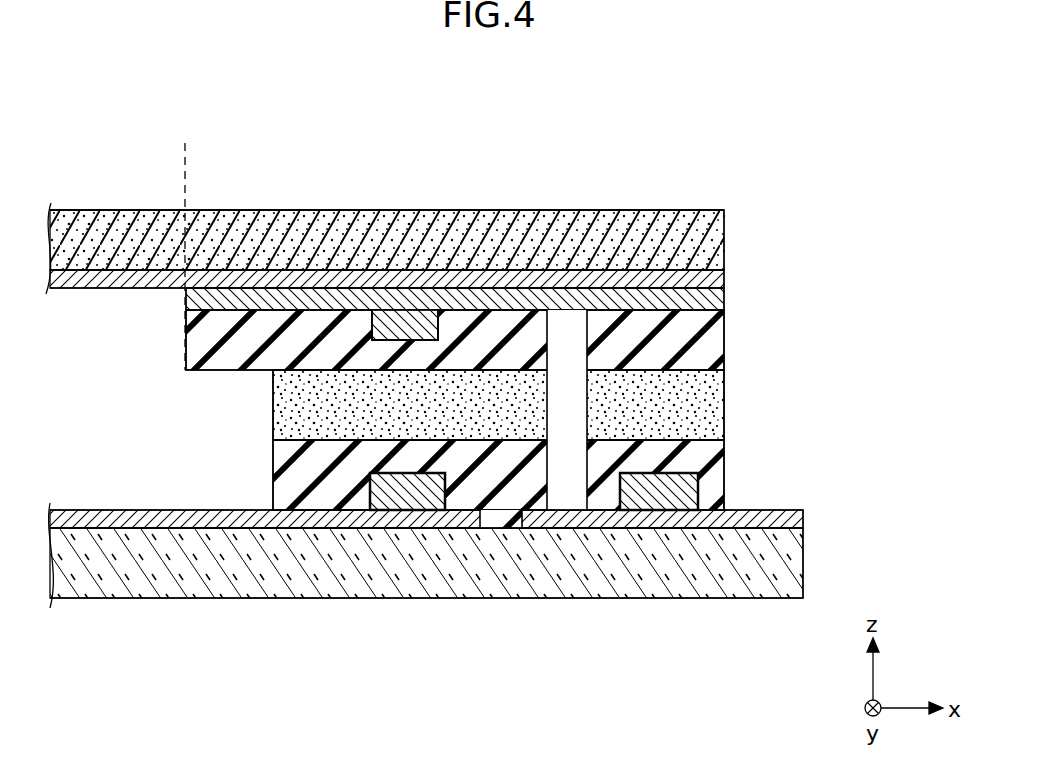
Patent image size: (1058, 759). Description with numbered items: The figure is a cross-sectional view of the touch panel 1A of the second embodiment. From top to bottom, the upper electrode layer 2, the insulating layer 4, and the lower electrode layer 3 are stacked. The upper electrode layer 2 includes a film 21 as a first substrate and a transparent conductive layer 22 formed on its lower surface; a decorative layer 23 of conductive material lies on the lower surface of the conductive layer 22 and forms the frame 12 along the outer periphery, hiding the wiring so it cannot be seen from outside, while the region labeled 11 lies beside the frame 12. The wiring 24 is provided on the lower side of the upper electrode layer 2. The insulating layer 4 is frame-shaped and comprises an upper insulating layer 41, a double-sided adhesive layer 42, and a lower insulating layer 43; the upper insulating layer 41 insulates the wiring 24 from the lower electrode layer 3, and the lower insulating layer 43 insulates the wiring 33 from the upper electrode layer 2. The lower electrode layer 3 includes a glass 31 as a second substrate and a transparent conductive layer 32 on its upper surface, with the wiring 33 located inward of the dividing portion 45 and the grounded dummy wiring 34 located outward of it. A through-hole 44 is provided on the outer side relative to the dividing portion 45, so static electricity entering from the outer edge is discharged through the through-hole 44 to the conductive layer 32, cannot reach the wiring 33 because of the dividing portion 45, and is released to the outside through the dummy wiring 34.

The touch panel 1A is at (822, 152).
The first region 11 is at (113, 210).
The frame 12 is at (446, 210).
The upper electrode layer 2 is at (823, 215).
The film 21 is at (712, 228).
The transparent conductive layer 22 is at (712, 277).
The decorative layer 23 is at (712, 297).
The wiring 24 is at (403, 325).
The insulating layer 4 is at (823, 360).
The upper insulating layer 41 is at (710, 338).
The double-sided adhesive layer 42 is at (712, 408).
The lower insulating layer 43 is at (712, 455).
The through-hole 44 is at (568, 417).
The dividing portion 45 is at (500, 520).
The lower electrode layer 3 is at (890, 448).
The glass 31 is at (795, 560).
The transparent conductive layer 32 is at (795, 517).
The wiring 33 is at (407, 500).
The dummy wiring 34 is at (673, 492).